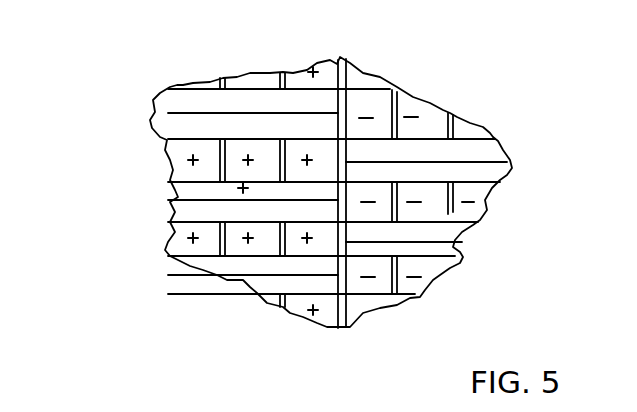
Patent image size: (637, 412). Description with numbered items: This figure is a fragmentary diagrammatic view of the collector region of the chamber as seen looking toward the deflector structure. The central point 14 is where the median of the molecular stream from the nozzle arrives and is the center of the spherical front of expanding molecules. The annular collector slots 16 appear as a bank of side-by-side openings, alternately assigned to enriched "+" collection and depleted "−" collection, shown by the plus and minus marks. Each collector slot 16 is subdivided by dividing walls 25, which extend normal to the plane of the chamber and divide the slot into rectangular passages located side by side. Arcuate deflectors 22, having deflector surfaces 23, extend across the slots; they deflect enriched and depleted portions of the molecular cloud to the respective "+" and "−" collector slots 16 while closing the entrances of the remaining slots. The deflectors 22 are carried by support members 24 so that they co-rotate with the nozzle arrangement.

The central point 14 is at (340, 183).
The annular collector slots 16 is at (168, 162).
The arcuate deflectors 22 is at (172, 110).
The deflector surfaces 23 is at (567, 233).
The support members 24 is at (338, 317).
The dividing walls 25 is at (400, 103).